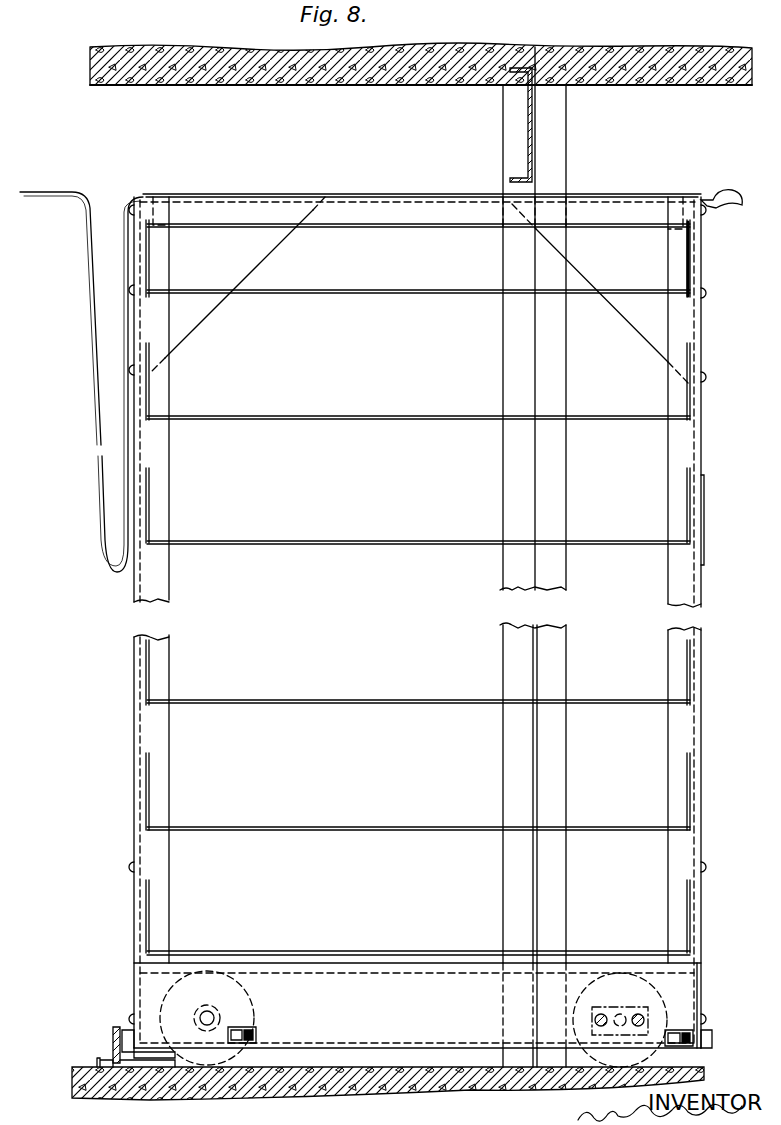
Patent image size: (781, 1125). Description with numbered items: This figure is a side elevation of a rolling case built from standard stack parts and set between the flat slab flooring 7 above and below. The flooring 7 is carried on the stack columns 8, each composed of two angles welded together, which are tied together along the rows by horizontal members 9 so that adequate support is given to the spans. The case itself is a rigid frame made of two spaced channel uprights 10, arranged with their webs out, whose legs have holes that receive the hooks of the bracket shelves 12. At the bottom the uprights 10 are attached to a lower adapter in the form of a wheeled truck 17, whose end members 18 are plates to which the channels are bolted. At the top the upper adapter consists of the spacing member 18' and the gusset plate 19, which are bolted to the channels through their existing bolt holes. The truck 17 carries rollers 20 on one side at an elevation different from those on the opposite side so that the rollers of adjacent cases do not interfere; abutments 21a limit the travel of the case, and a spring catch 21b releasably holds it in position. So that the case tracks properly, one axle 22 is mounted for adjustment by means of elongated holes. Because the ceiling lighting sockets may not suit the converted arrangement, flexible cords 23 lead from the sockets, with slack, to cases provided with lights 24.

The flat slab flooring 7 is at (297, 84).
The stack columns 8 is at (506, 641).
The horizontal members 9 is at (536, 138).
The uprights 10 is at (672, 579).
The bracket shelves 12 is at (398, 294).
The wheeled truck 17 is at (417, 1005).
The end members 18 is at (414, 622).
The spacing member 18' is at (420, 189).
The gusset plate 19 is at (420, 291).
The rollers 20 is at (256, 1032).
The abutments 21a is at (113, 1046).
The spring catch 21b is at (155, 1062).
The axle 22 is at (626, 1004).
The flexible cords 23 is at (100, 346).
The lights 24 is at (722, 198).